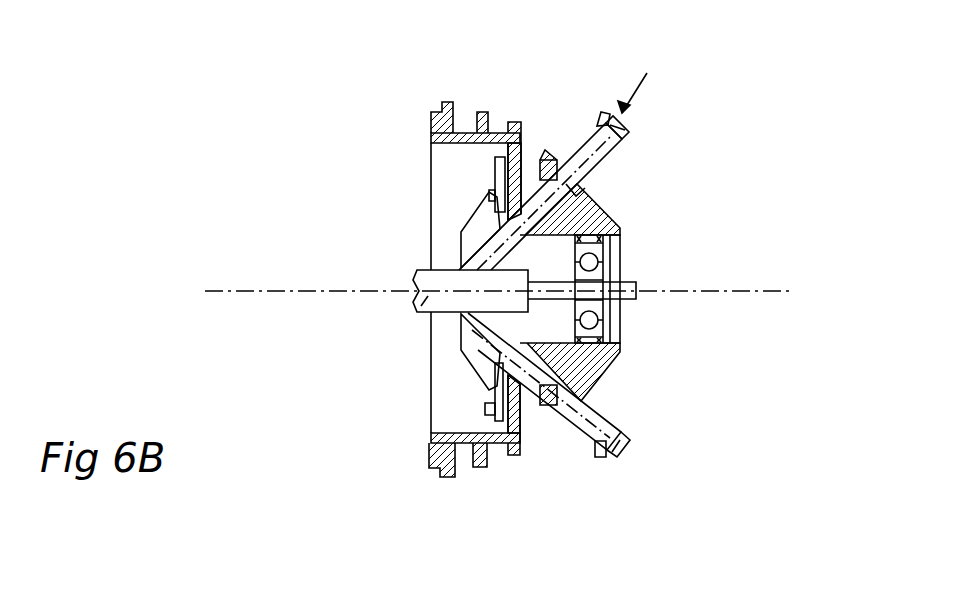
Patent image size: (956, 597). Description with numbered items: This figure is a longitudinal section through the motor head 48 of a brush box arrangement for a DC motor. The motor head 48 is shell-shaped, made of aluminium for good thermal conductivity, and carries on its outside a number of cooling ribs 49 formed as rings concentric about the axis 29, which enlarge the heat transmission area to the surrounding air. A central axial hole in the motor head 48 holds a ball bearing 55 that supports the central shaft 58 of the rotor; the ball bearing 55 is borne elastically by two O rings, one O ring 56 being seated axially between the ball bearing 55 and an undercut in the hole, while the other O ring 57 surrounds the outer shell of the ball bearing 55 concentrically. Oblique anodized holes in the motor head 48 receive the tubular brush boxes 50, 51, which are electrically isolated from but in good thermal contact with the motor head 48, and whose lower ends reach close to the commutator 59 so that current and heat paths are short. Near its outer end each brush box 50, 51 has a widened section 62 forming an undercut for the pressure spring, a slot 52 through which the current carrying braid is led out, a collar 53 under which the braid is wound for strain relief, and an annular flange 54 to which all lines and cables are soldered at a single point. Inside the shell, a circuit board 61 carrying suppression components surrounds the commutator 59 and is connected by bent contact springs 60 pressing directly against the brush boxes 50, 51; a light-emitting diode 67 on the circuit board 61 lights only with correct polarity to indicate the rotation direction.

The axis 29 is at (747, 291).
The motor head 48 is at (432, 126).
The cooling ribs 49 is at (474, 477).
The brush box 50 is at (645, 81).
The brush box 51 is at (600, 414).
The slot 52 is at (620, 446).
The collar 53 is at (605, 458).
The annular flange 54 is at (541, 417).
The ball bearing 55 is at (603, 266).
The O ring 56 is at (620, 237).
The O ring 57 is at (597, 200).
The central shaft 58 is at (638, 300).
The commutator 59 is at (417, 317).
The contact springs 60 is at (465, 228).
The circuit board 61 is at (494, 170).
The widened section 62 is at (585, 148).
The light-emitting diode 67 is at (488, 412).